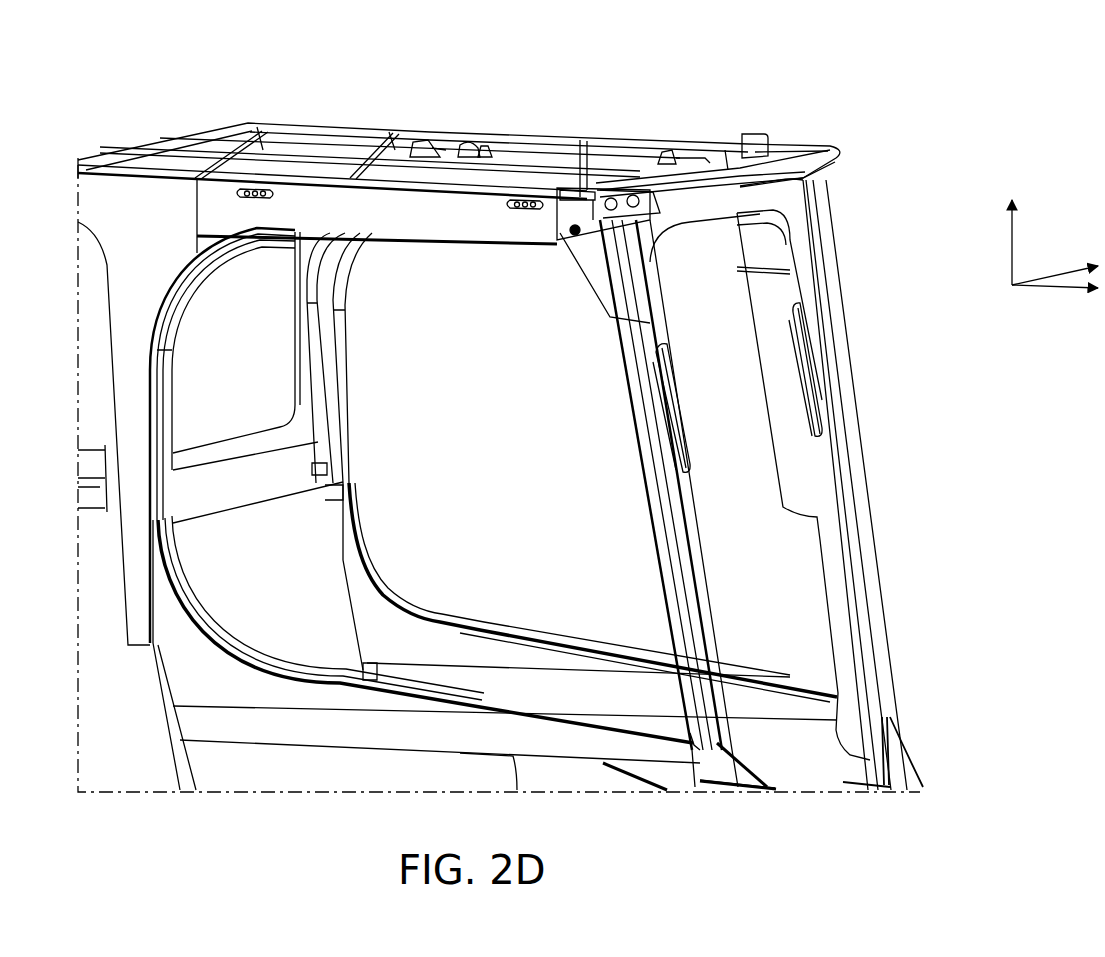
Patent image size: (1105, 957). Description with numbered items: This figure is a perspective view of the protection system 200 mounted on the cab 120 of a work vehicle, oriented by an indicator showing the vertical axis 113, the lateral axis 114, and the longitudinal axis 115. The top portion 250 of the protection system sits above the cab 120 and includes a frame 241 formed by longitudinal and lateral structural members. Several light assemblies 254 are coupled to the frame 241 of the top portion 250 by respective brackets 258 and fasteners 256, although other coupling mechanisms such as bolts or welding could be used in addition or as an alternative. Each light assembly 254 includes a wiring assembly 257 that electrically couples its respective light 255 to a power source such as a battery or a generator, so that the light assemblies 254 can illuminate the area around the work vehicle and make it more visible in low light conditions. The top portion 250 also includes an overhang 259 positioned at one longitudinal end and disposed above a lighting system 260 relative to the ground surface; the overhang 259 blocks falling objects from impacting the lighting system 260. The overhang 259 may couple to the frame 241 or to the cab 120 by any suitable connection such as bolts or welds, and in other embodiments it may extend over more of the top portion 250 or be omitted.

The protection system 200 is at (298, 76).
The top portion 250 is at (592, 95).
The frame 241 is at (587, 128).
The light assembly 254 is at (460, 138).
The fastener 256 is at (480, 142).
The wiring assembly 257 is at (420, 141).
The bracket 258 is at (720, 152).
The overhang 259 is at (818, 148).
The light 255 is at (522, 210).
The lighting system 260 is at (604, 255).
The cab 120 is at (853, 467).
The vertical axis 113 is at (1012, 250).
The lateral axis 114 is at (1040, 288).
The longitudinal axis 115 is at (1042, 270).